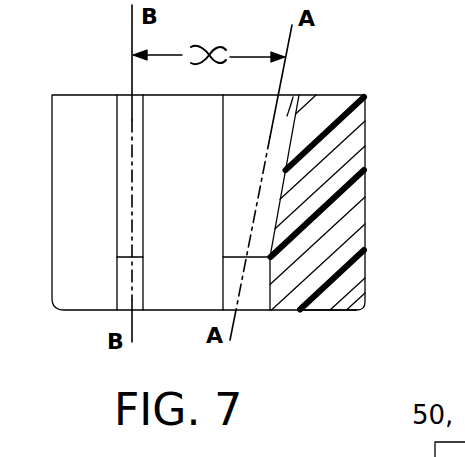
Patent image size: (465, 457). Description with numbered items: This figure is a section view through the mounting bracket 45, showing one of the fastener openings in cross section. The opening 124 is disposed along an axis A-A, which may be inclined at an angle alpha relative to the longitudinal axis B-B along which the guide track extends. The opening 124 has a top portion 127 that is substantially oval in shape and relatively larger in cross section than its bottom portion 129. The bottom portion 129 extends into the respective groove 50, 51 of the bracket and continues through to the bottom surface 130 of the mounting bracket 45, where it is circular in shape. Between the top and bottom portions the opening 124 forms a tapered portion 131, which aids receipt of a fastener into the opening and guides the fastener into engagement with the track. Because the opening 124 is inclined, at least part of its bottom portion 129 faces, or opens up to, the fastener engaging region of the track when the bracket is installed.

The mounting bracket 45 is at (345, 52).
The groove 50 is at (96, 178).
The groove 51 is at (162, 175).
The opening 124 is at (275, 128).
The top portion 127 is at (293, 97).
The bottom portion 129 is at (255, 312).
The bottom surface 130 is at (320, 312).
The tapered portion 131 is at (365, 169).